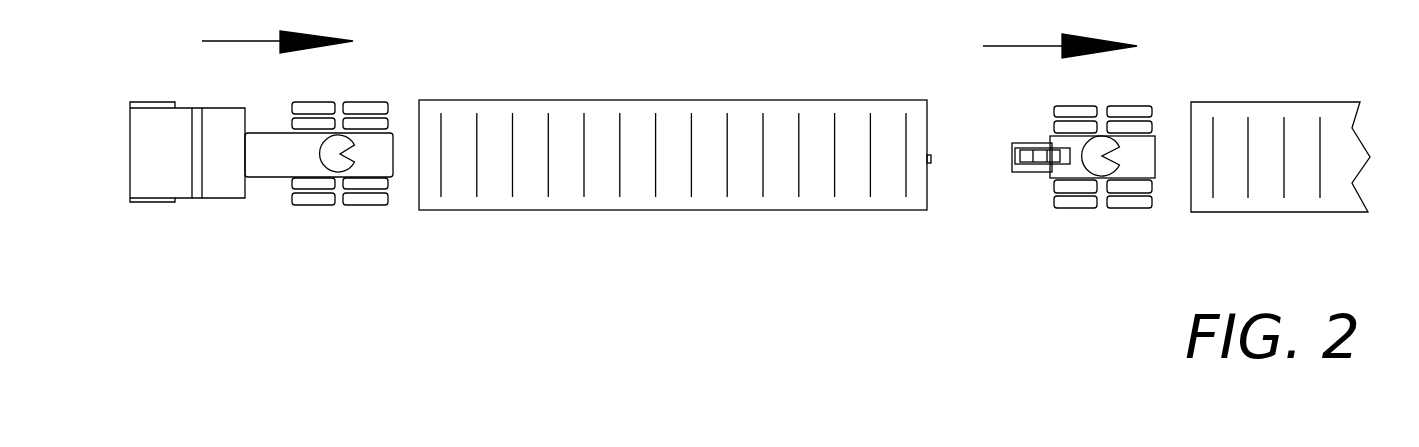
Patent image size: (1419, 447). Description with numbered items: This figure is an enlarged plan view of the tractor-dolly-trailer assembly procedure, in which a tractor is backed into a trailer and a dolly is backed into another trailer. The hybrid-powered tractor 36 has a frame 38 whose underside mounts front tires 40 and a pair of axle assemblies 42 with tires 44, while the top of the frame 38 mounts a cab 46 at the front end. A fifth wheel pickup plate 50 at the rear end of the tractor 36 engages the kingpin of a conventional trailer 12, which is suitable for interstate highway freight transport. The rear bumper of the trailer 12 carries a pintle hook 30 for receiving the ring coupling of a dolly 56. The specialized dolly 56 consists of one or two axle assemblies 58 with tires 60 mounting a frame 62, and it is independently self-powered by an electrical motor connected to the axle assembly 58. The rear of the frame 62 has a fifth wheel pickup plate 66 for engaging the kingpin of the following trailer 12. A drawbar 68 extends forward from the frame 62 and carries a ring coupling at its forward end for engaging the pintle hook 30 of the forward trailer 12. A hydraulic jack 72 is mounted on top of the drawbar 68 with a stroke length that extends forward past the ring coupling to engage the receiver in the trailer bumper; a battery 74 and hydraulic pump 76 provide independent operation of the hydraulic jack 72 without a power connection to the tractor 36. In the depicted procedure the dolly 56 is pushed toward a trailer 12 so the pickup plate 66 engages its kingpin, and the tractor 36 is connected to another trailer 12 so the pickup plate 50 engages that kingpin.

The trailer 12 is at (645, 90).
The pintle hook 30 is at (931, 160).
The tractor 36 is at (278, 201).
The frame 38 is at (272, 133).
The front tires 40 is at (153, 204).
The axle assemblies 42 is at (312, 102).
The tires 44 is at (312, 206).
The cab 46 is at (213, 200).
The fifth wheel pickup plate 50 is at (320, 157).
The dolly 56 is at (1079, 204).
The axle assemblies 58 is at (1073, 106).
The tires 60 is at (1133, 209).
The frame 62 is at (1157, 160).
The fifth wheel pickup plate 66 is at (1117, 162).
The drawbar 68 is at (1033, 147).
The hydraulic jack 72 is at (1012, 148).
The battery 74 is at (1040, 166).
The hydraulic pump 76 is at (1055, 176).